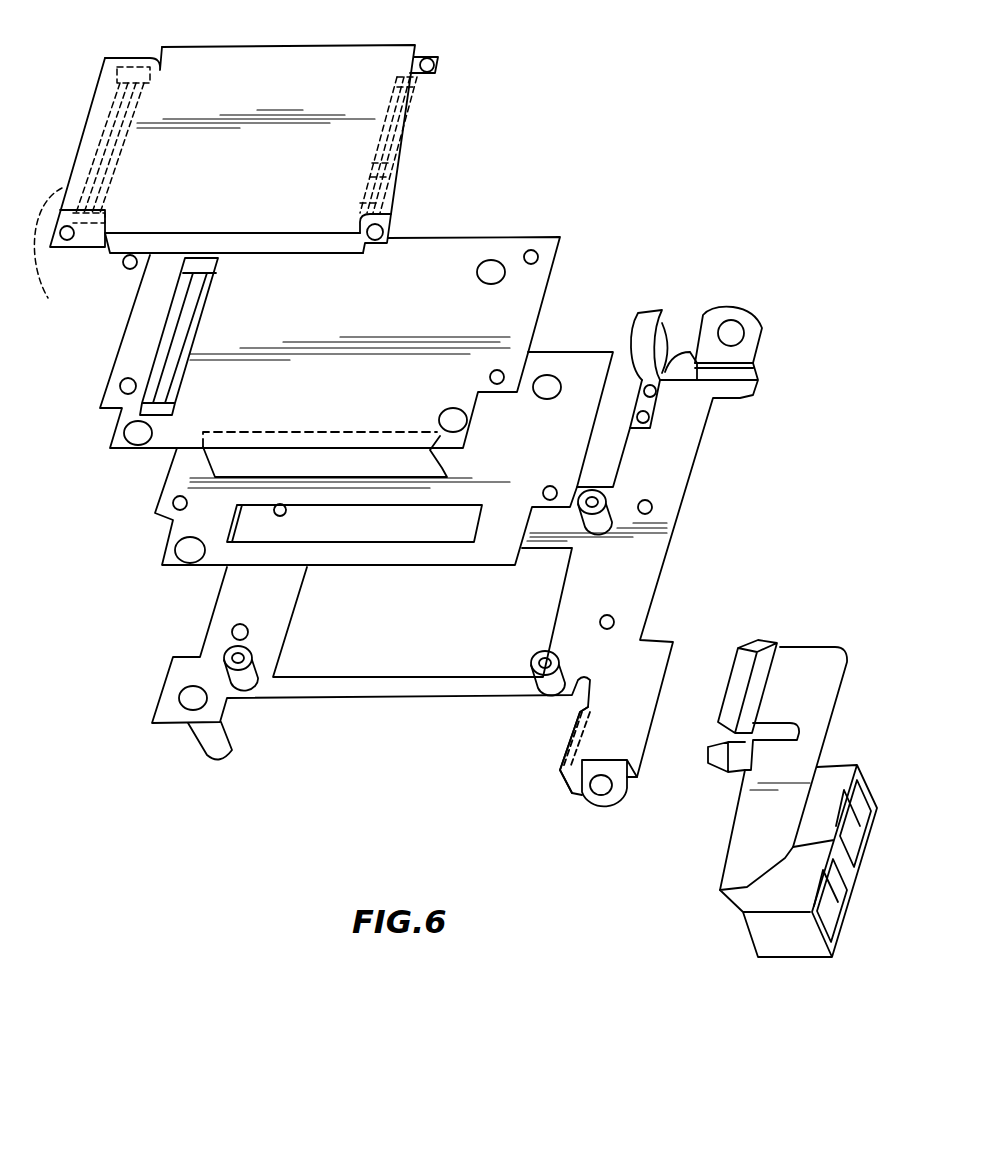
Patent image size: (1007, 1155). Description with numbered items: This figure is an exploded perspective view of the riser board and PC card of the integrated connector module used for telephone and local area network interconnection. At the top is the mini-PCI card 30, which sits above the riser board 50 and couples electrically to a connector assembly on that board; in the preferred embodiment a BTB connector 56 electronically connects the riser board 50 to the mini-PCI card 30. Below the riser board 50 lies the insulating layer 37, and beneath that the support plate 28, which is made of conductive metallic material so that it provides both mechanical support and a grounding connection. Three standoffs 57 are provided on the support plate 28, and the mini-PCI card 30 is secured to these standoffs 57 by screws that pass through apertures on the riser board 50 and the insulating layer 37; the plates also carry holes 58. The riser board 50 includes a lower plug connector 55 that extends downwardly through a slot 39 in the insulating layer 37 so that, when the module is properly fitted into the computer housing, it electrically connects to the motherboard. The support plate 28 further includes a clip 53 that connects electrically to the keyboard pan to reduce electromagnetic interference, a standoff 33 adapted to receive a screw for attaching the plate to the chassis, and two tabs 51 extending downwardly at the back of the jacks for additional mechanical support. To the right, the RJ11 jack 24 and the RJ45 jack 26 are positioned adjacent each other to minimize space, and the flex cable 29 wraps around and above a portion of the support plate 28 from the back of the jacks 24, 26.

The mini-PCI card 30 is at (438, 63).
The riser board 50 is at (562, 245).
The clip 53 is at (662, 322).
The BTB connector 56 is at (163, 337).
The support plate 28 is at (656, 444).
The standoffs 57 is at (607, 500).
The lower plug connector 55 is at (207, 462).
The insulating layer 37 is at (153, 513).
The slot 39 is at (175, 527).
The hole 58 is at (232, 632).
The flex cable 29 is at (788, 667).
The RJ11 jack 24 is at (868, 804).
The standoff 33 is at (193, 742).
The tabs 51 is at (537, 763).
The RJ45 jack 26 is at (832, 905).